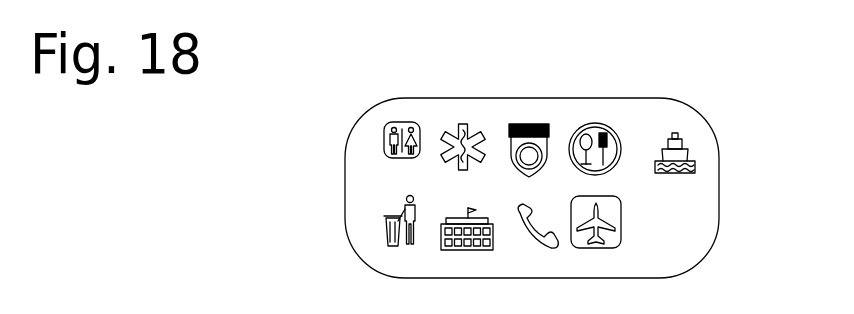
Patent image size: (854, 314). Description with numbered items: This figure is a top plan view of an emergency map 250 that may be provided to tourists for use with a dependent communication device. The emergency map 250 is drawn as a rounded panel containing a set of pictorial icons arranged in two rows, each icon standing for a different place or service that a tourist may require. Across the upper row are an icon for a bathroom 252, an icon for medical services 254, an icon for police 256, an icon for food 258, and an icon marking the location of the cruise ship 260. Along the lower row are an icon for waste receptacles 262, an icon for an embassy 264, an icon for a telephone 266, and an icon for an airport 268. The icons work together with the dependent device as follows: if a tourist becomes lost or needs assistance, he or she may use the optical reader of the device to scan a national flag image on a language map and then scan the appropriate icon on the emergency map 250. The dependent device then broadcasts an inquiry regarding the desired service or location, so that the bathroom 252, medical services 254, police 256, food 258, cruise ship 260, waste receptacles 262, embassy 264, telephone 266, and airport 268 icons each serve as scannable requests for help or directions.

The emergency map 250 is at (233, 251).
The bathroom icon 252 is at (383, 133).
The medical services icon 254 is at (473, 123).
The police icon 256 is at (547, 130).
The food icon 258 is at (610, 133).
The cruise ship location icon 260 is at (690, 152).
The waste receptacles icon 262 is at (383, 235).
The embassy icon 264 is at (467, 242).
The telephone icon 266 is at (533, 245).
The airport icon 268 is at (612, 242).